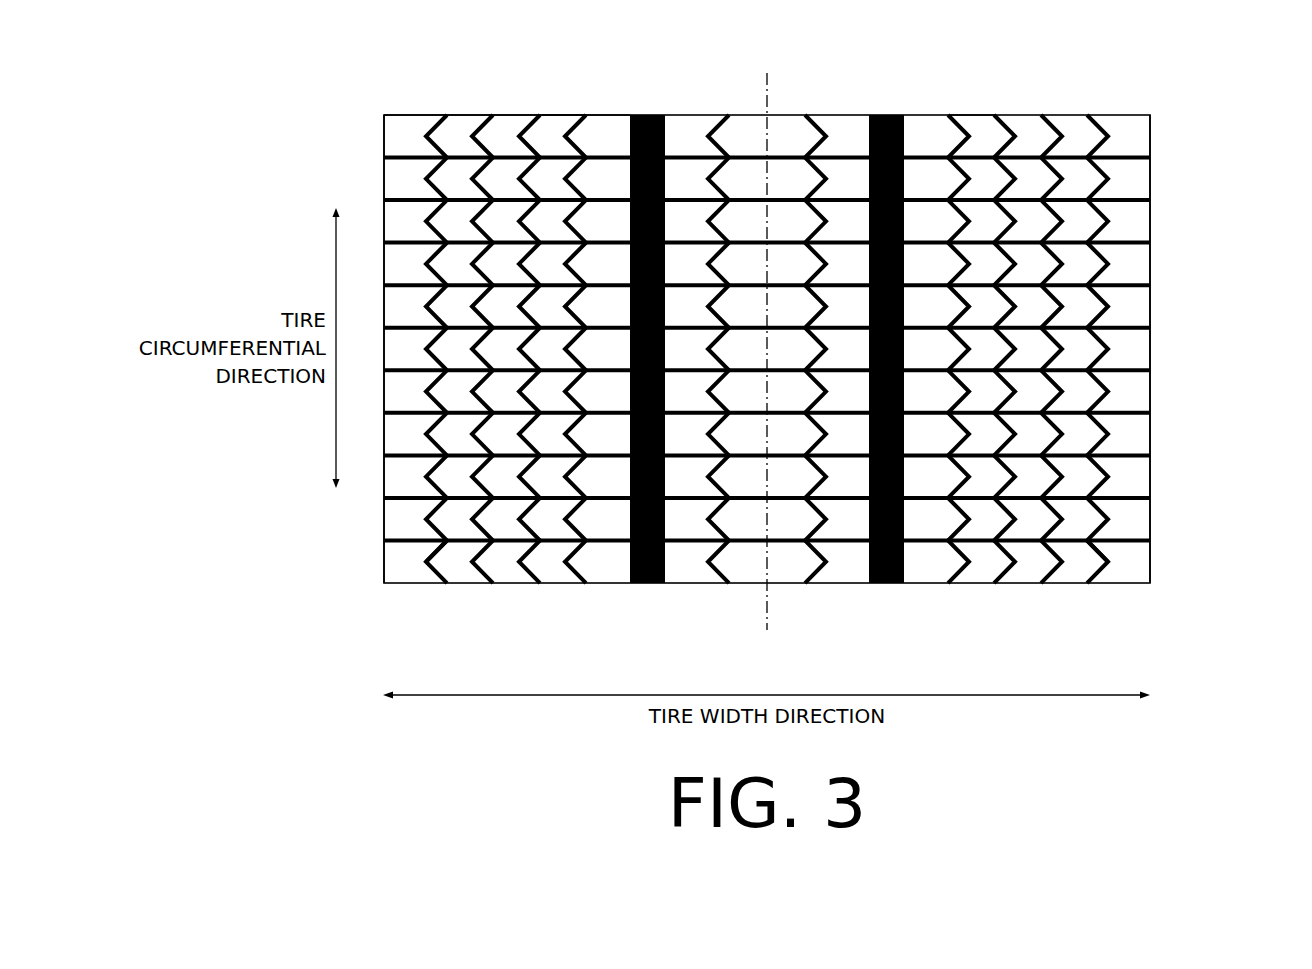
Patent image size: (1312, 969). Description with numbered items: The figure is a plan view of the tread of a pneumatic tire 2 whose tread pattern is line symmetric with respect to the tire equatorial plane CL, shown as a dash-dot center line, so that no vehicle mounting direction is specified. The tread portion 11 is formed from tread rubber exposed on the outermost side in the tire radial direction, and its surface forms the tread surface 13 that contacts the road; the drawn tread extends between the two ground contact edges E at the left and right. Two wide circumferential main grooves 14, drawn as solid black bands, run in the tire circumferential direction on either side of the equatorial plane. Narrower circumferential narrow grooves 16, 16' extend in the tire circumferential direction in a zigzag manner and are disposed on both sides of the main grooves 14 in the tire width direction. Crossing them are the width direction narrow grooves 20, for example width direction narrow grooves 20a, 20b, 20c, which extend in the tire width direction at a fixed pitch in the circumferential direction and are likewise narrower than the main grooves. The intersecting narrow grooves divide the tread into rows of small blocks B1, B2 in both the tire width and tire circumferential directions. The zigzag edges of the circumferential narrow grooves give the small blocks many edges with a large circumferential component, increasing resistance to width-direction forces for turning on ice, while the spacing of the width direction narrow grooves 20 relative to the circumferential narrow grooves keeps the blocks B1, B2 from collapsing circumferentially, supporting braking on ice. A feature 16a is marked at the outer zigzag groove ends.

The pneumatic tire 2 is at (407, 100).
The ground contact edge E is at (380, 100).
The tread portion 11 is at (511, 100).
The tread surface 13 is at (603, 135).
The circumferential main groove 14 is at (647, 584).
The circumferential narrow groove 16 is at (727, 388).
The circumferential narrow groove 16' is at (806, 388).
The sipe end portion 16a is at (428, 531).
The width direction narrow groove 20 is at (843, 349).
The width direction narrow groove 20a is at (1124, 282).
The width direction narrow groove 20b is at (1130, 320).
The width direction narrow groove 20c is at (1130, 366).
The small block B1 is at (552, 135).
The small block B2 is at (981, 135).
The tire equatorial plane CL is at (767, 336).